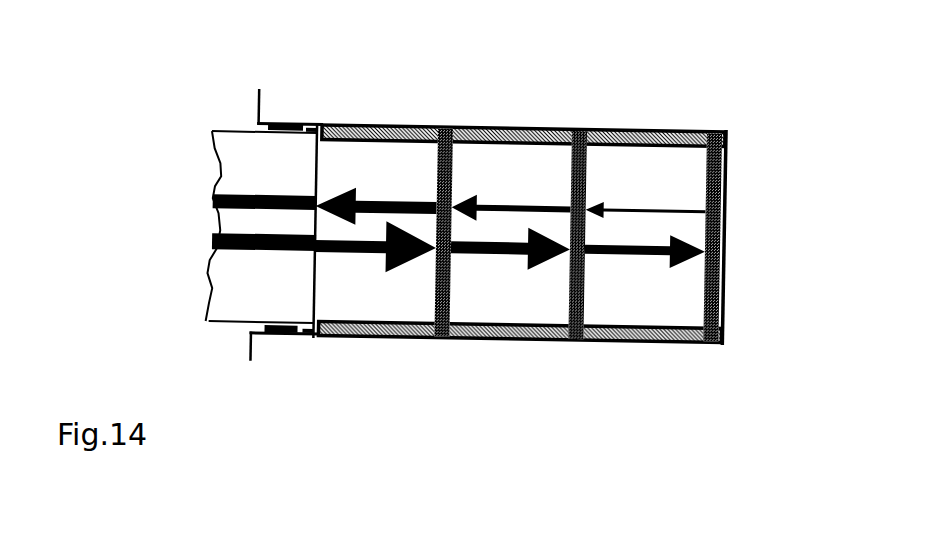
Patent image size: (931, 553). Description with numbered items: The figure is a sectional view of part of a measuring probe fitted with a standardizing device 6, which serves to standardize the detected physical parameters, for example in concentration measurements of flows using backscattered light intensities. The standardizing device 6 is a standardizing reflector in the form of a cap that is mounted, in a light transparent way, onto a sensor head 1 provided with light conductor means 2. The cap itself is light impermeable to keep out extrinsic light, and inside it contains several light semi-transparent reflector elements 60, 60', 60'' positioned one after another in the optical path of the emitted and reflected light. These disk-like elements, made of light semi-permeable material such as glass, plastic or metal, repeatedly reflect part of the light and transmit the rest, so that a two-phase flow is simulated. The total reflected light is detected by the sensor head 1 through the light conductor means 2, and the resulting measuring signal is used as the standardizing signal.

The sensor head 1 is at (278, 160).
The light conductor means 2 is at (222, 213).
The standardizing device 6 is at (381, 50).
The semi-transparent reflector element 60 is at (489, 195).
The semi-transparent reflector element 60' is at (657, 200).
The semi-transparent reflector element 60'' is at (787, 225).